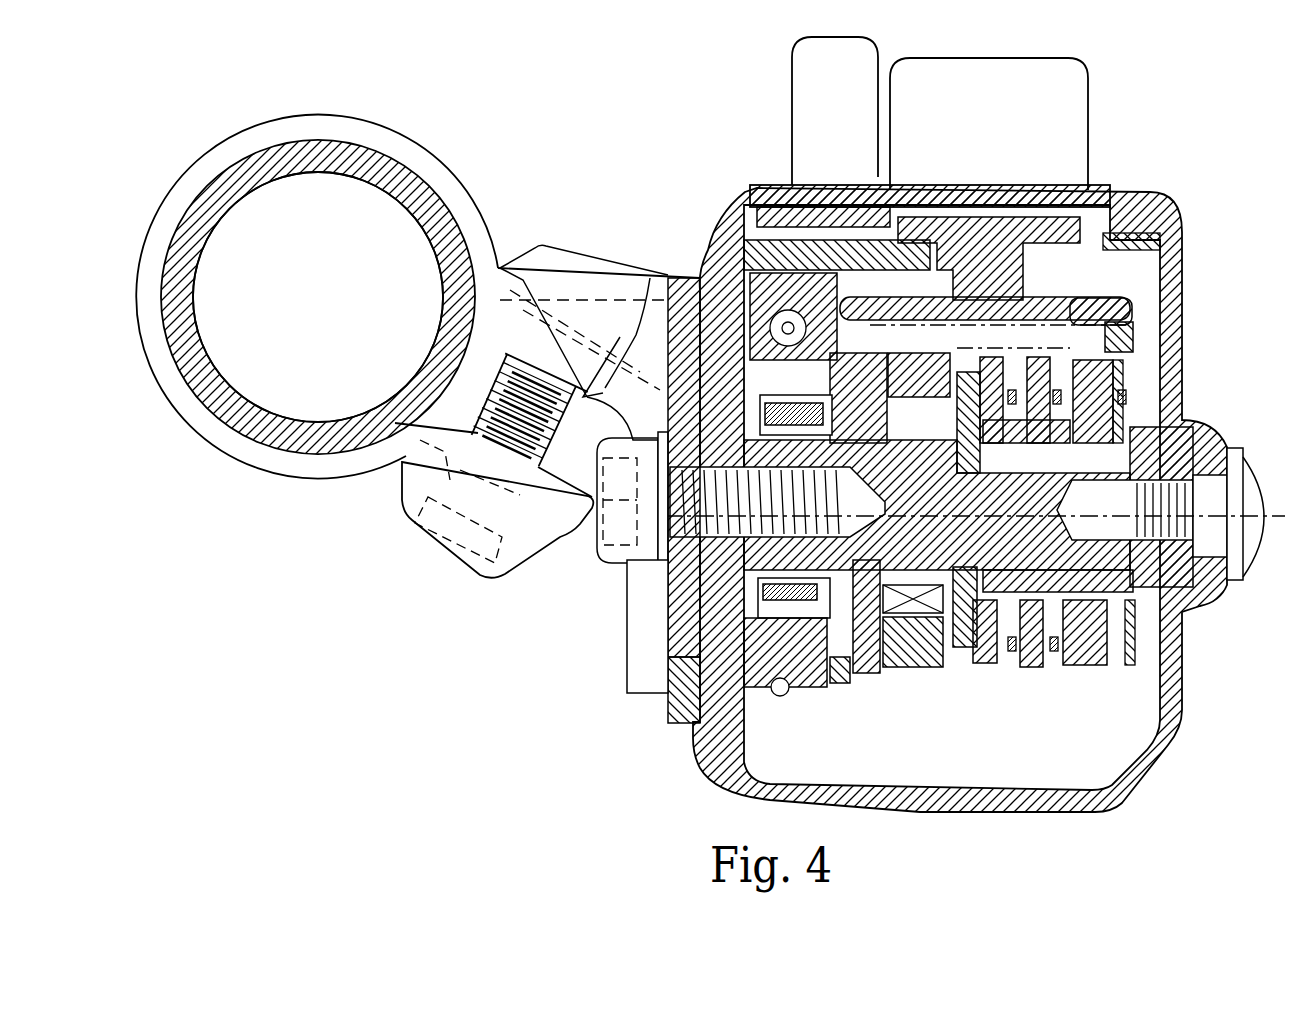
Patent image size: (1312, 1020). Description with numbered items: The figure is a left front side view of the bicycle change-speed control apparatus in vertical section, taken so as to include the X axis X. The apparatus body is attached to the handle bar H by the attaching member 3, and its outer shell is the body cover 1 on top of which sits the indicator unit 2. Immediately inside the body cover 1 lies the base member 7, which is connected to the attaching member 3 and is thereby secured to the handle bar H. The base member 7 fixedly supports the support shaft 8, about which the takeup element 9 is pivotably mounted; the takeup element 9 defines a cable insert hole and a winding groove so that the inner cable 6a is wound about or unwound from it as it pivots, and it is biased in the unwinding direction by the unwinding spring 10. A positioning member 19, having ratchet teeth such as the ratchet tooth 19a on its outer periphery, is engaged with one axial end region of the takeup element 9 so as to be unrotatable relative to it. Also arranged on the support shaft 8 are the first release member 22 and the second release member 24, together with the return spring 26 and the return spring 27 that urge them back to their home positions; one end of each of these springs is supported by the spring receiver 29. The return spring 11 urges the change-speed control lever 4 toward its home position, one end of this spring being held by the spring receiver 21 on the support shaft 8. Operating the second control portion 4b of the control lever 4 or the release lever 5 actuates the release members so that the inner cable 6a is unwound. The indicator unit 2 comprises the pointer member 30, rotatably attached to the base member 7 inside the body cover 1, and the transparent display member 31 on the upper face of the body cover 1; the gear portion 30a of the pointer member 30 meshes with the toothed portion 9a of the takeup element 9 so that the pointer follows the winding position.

The body cover 1 is at (1153, 760).
The indicator unit 2 is at (1016, 172).
The attaching member 3 is at (420, 150).
The change-speed control lever 4 is at (1090, 667).
The second control portion 4b is at (1083, 93).
The release lever 5 is at (792, 72).
The inner cable 6a is at (797, 320).
The base member 7 is at (737, 693).
The support shaft 8 is at (843, 670).
The takeup element 9 is at (780, 278).
The toothed portion 9a is at (857, 673).
The unwinding spring 10 is at (787, 672).
The return spring 11 is at (1113, 643).
The positioning member 19 is at (905, 663).
The ratchet tooth 19a is at (927, 672).
The spring receiver 21 is at (1133, 660).
The first release member 22 is at (983, 663).
The second release member 24 is at (1030, 665).
The return spring 26 is at (1010, 651).
The return spring 27 is at (1054, 651).
The spring receiver 29 is at (1073, 340).
The pointer member 30 is at (1073, 197).
The gear portion 30a is at (1123, 340).
The display member 31 is at (938, 185).
The handle bar H is at (305, 447).
The X axis X is at (953, 518).